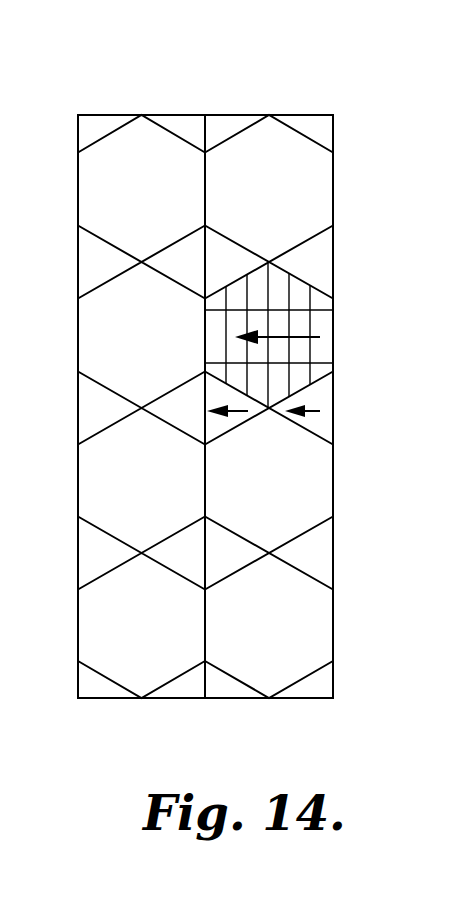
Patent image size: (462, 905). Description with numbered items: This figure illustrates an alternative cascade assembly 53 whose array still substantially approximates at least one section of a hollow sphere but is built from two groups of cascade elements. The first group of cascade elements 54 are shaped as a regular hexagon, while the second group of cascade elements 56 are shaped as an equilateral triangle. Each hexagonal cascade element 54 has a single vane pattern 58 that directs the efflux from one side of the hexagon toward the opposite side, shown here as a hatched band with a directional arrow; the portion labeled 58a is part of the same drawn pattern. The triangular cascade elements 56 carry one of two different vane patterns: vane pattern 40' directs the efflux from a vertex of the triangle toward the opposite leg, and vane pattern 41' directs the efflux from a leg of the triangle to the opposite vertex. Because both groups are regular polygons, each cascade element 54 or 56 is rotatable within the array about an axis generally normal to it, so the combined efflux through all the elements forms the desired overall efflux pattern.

The cascade assembly 53 is at (90, 82).
The central dividing line 58a is at (205, 180).
The vane pattern 58 is at (277, 286).
The first group of cascade elements 54 is at (307, 290).
The vane pattern 41' is at (354, 394).
The vane pattern 40' is at (244, 455).
The second group of cascade elements 56 is at (320, 446).